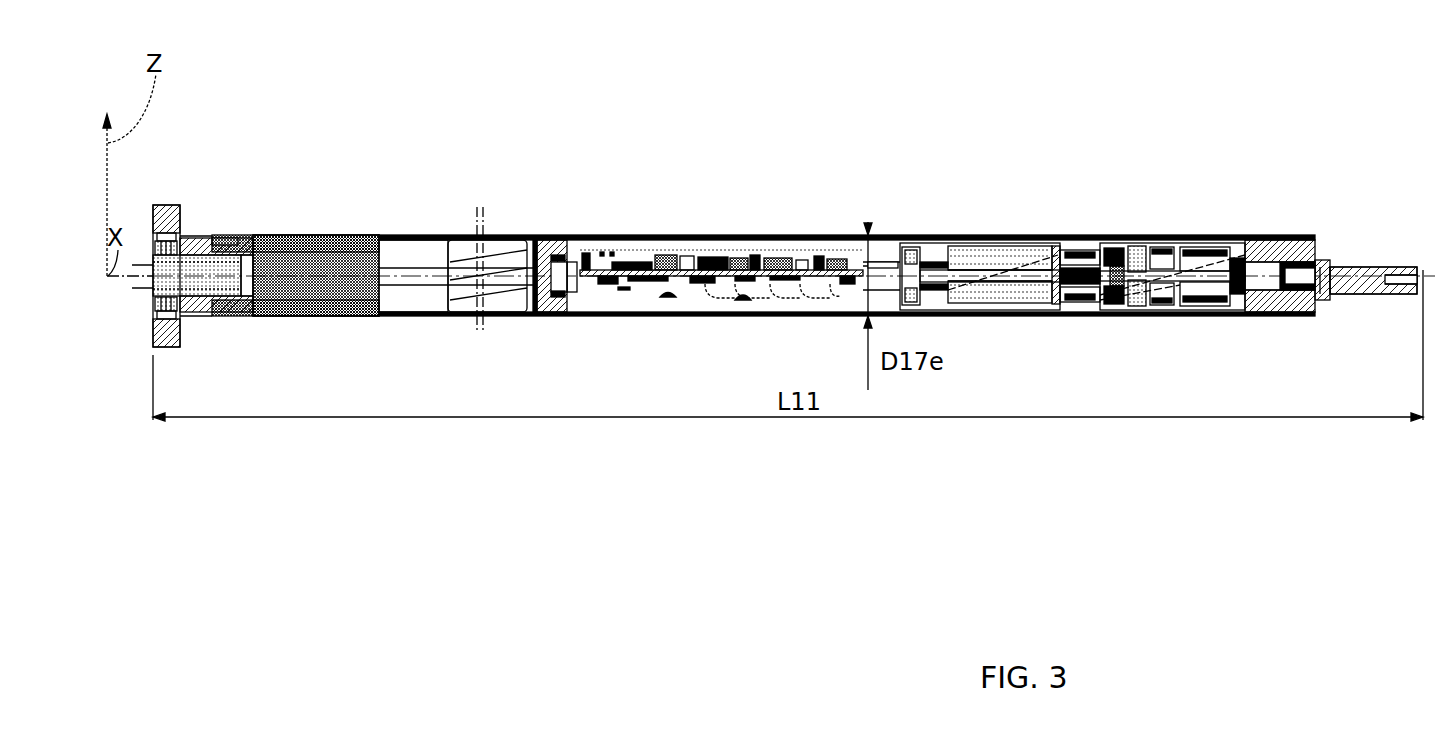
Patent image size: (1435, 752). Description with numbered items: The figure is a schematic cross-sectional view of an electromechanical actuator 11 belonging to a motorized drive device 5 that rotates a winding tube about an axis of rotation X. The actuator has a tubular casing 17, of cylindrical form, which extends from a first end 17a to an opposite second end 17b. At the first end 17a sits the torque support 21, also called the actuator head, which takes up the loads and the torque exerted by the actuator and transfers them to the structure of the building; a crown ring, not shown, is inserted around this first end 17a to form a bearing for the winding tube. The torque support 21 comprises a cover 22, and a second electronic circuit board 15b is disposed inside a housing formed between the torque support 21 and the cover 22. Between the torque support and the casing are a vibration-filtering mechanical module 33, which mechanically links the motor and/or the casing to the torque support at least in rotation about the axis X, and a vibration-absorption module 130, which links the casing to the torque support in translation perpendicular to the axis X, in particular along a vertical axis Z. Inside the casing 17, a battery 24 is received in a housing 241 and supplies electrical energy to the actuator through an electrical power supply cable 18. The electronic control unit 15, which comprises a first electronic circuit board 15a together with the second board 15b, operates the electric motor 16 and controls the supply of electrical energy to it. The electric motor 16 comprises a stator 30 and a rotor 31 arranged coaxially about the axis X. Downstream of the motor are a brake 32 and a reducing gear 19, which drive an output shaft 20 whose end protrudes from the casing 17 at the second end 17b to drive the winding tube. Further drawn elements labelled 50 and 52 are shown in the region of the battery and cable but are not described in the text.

The motorized drive device 5 is at (363, 345).
The electromechanical actuator 11 is at (410, 237).
The electronic control unit 15 is at (605, 272).
The first electronic circuit board 15a is at (638, 252).
The second electronic circuit board 15b is at (155, 305).
The electric motor 16 is at (992, 262).
The casing 17 is at (837, 235).
The first end of the casing 17a is at (209, 316).
The second end of the casing 17b is at (1310, 314).
The electrical power supply cable 18 is at (543, 257).
The reducing gear 19 is at (1160, 250).
The output shaft 20 is at (1373, 270).
The torque support 21 is at (192, 238).
The cover 22 is at (153, 213).
The battery 24 is at (465, 305).
The stator 30 is at (963, 252).
The rotor 31 is at (998, 277).
The brake 32 is at (1072, 260).
The vibration-filtering mechanical module 33 is at (272, 235).
The spindle 50 is at (493, 268).
The spindle thread 52 is at (507, 287).
The vibration-absorption module 130 is at (227, 233).
The housing 241 is at (440, 240).